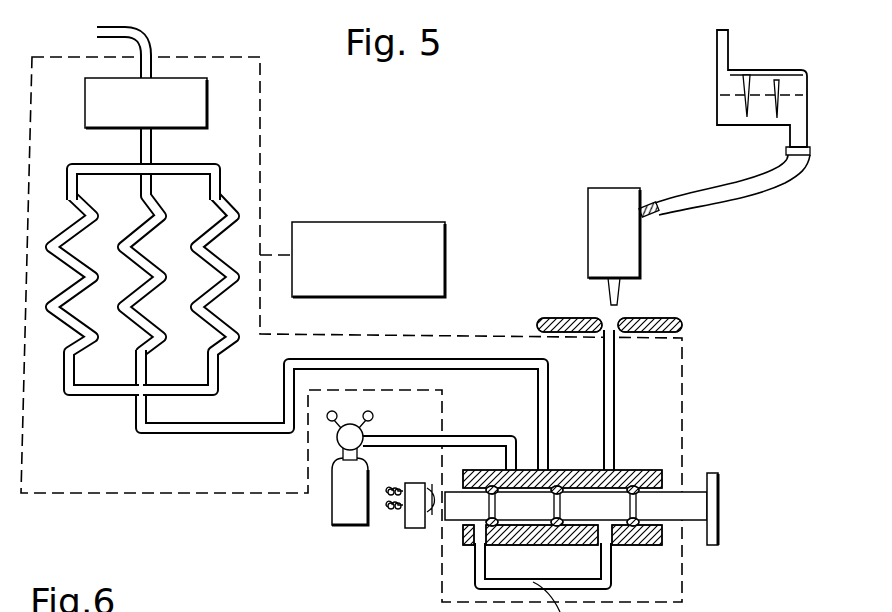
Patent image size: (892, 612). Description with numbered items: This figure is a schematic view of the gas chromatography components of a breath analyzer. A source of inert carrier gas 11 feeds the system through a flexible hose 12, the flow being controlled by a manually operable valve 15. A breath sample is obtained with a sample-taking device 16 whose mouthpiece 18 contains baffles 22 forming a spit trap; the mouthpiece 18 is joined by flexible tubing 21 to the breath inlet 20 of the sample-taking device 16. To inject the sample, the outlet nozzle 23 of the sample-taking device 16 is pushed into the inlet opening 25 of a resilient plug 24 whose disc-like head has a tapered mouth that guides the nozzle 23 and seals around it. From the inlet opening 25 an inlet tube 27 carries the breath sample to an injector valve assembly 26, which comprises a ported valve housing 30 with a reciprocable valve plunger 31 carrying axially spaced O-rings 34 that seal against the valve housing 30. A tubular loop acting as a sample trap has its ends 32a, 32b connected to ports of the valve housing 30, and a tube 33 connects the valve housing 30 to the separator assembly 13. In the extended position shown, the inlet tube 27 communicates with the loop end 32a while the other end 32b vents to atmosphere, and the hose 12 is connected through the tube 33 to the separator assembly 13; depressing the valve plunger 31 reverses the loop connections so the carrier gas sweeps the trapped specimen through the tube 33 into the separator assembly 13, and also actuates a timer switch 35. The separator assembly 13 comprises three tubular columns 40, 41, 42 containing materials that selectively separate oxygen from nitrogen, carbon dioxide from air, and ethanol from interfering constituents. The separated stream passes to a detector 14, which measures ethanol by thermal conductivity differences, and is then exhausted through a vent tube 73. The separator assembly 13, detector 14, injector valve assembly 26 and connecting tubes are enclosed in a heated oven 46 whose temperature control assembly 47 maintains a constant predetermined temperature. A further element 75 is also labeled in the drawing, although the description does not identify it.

In FIG. 5, the source of inert carrier gas 11 is at (340, 505).
In FIG. 5, the flexible hose 12 is at (423, 440).
In FIG. 5, the separator assembly 13 is at (106, 401).
In FIG. 5, the detector 14 is at (203, 100).
In FIG. 5, the manually operable valve 15 is at (352, 423).
In FIG. 5, the sample-taking device 16 is at (595, 238).
In FIG. 5, the mouthpiece 18 is at (722, 58).
In FIG. 5, the breath inlet 20 is at (653, 215).
In FIG. 5, the flexible tubing 21 is at (752, 189).
In FIG. 5, the baffles 22 is at (778, 80).
In FIG. 5, the outlet nozzle 23 is at (618, 292).
In FIG. 5, the plug 24 is at (536, 322).
In FIG. 5, the inlet opening 25 is at (604, 326).
In FIG. 5, the injector valve assembly 26 is at (622, 466).
In FIG. 5, the inlet tube 27 is at (617, 378).
In FIG. 5, the ported valve housing 30 is at (558, 470).
In FIG. 5, the valve member 31 is at (700, 472).
In FIG. 5, the end of tubular loop 32a is at (602, 536).
In FIG. 5, the end of tubular loop 32b is at (470, 544).
In FIG. 5, the tube 33 is at (200, 427).
In FIG. 5, the O-rings 34 is at (641, 487).
In FIG. 5, the timer switch 35 is at (418, 517).
In FIG. 5, the column 40 is at (63, 372).
In FIG. 5, the column 41 is at (133, 375).
In FIG. 5, the column 42 is at (207, 375).
In FIG. 5, the oven 46 is at (262, 133).
In FIG. 5, the temperature control assembly 47 is at (347, 222).
In FIG. 5, the vent tube 73 is at (117, 27).
In FIG. 6, the component 75 is at (300, 611).